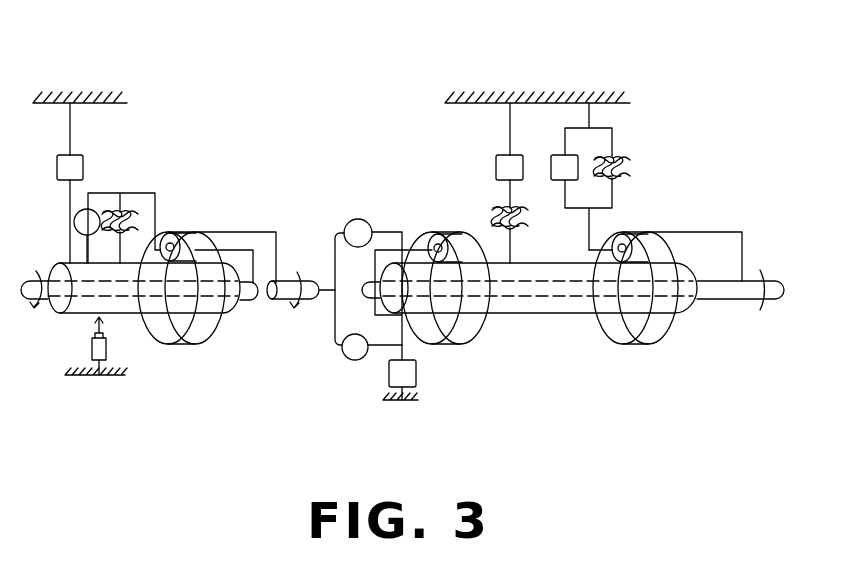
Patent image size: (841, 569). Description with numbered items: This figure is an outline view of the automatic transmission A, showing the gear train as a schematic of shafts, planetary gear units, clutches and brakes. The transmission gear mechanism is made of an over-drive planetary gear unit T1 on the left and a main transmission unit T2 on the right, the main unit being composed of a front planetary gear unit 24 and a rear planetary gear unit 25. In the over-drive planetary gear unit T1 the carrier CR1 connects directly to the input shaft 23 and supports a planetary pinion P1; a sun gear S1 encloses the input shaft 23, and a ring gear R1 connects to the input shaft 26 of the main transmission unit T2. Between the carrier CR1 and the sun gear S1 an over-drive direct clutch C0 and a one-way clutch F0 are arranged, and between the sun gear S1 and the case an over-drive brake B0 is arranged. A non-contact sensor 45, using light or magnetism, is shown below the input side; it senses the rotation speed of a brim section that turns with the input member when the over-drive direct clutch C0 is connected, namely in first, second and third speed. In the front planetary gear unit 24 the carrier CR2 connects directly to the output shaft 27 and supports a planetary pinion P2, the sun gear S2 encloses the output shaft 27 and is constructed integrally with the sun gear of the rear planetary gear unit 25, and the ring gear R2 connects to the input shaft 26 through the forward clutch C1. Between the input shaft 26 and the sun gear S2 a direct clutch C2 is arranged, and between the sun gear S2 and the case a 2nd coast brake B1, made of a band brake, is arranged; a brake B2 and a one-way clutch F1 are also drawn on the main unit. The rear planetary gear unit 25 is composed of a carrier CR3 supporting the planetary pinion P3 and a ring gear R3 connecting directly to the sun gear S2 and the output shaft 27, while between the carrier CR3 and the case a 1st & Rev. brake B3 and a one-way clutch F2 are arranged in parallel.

The automatic transmission A is at (355, 92).
The input shaft 23 is at (43, 282).
The front planetary gear unit 24 is at (465, 221).
The rear planetary gear unit 25 is at (653, 208).
The input shaft of main transmission unit 26 is at (301, 302).
The output shaft 27 is at (737, 299).
The non-contact sensor 45 is at (90, 353).
The over-drive brake B0 is at (80, 177).
The 2nd coast brake B1 is at (400, 372).
The brake B2 is at (537, 150).
The 1st & Rev. brake B3 is at (581, 176).
The over-drive direct clutch C0 is at (87, 236).
The forward clutch C1 is at (358, 233).
The direct clutch C2 is at (372, 347).
The one-way clutch F0 is at (116, 237).
The one-way clutch F1 is at (511, 235).
The one-way clutch F2 is at (621, 171).
The carrier CR1 is at (145, 193).
The carrier CR2 is at (405, 250).
The carrier CR3 is at (588, 231).
The planetary pinion P1 is at (173, 234).
The planetary pinion P2 is at (437, 236).
The planetary pinion P3 is at (623, 234).
The ring gear R1 is at (210, 330).
The ring gear R2 is at (462, 338).
The ring gear R3 is at (677, 238).
The sun gear S1 is at (125, 317).
The sun gear S2 is at (547, 318).
The over-drive planetary gear unit T1 is at (210, 230).
The main transmission unit T2 is at (447, 197).